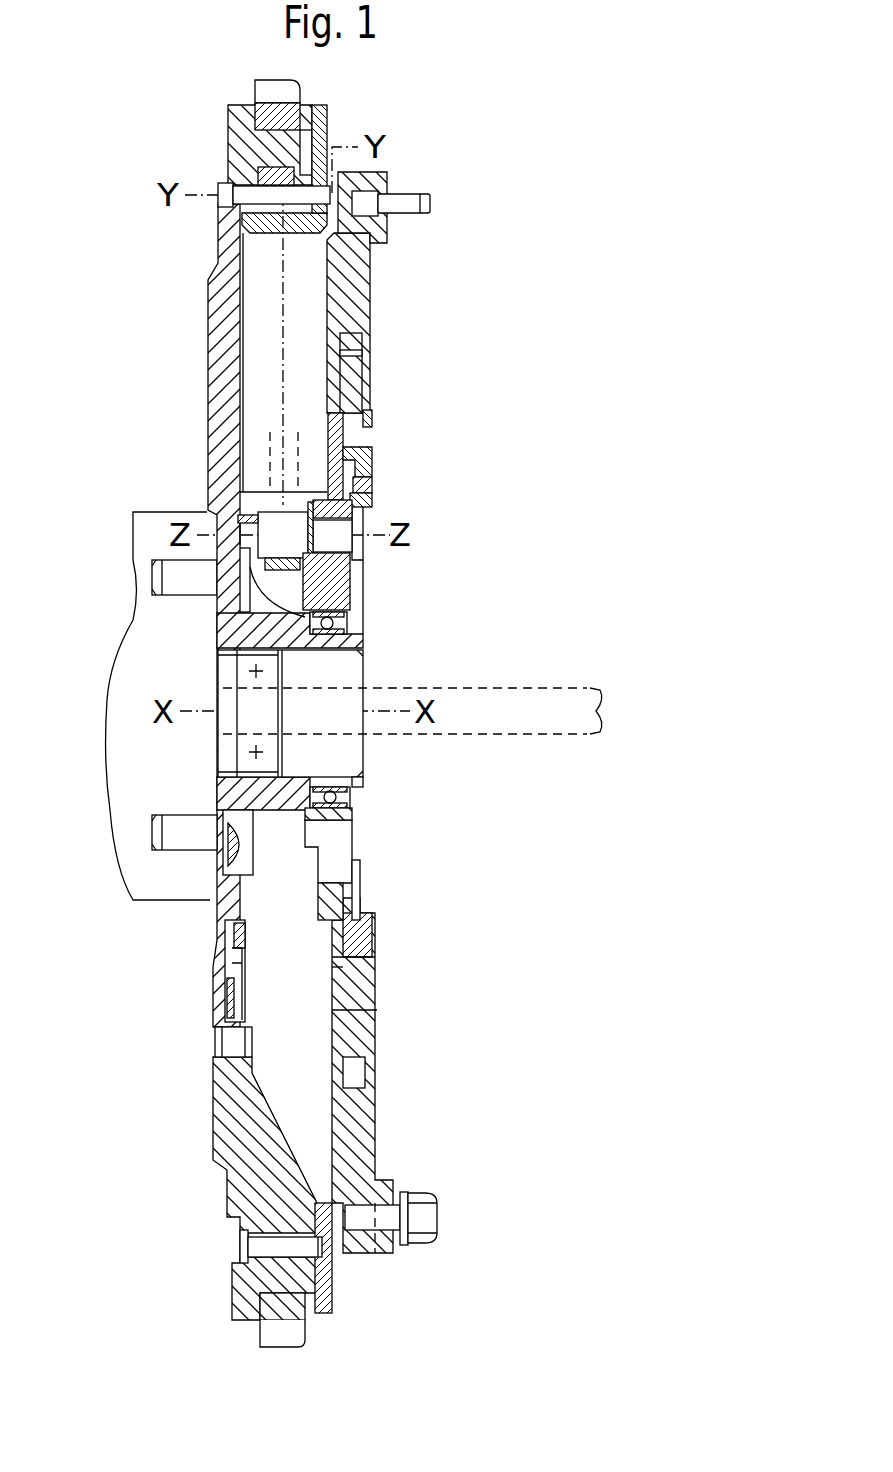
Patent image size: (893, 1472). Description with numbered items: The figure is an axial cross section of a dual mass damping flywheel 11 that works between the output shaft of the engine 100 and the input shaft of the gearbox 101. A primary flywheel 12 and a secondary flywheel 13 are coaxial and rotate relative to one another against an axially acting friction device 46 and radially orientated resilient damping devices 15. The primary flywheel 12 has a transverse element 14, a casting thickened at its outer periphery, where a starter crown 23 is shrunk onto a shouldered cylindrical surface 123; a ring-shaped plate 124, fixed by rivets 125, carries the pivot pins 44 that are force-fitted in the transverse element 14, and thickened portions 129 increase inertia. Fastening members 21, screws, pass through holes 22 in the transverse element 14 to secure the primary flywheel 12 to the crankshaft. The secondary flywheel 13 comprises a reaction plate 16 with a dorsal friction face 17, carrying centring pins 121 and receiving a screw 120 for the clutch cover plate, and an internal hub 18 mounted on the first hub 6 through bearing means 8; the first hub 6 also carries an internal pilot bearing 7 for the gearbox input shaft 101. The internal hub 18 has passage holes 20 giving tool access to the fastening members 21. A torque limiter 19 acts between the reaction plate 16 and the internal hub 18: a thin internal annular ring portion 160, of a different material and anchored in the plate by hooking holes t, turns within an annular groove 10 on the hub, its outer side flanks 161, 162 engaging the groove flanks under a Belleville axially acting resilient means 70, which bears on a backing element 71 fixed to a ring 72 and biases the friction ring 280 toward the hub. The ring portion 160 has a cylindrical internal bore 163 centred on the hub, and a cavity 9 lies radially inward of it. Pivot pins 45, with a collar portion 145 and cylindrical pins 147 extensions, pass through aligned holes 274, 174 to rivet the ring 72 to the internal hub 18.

The output shaft of the engine 100 is at (133, 620).
The dual mass damping flywheel 11 is at (285, 599).
The primary flywheel 12 is at (221, 1187).
The transverse element 14 is at (207, 338).
The reaction plate 16 is at (355, 290).
The dorsal friction face 17 is at (372, 258).
The resilient damping devices 15 is at (248, 266).
The starter crown 23 is at (292, 100).
The shouldered cylindrical surface 123 is at (257, 110).
The pivot pin 44 is at (225, 200).
The centring pin 121 is at (408, 182).
The internal annular ring portion 160 is at (358, 380).
The hooking holes t is at (364, 360).
The annular groove 10 is at (360, 410).
The outer side flank 161 is at (372, 428).
The axially acting resilient means 70 is at (368, 470).
The cavity 9 is at (366, 485).
The backing element 71 is at (370, 500).
The holes 174 is at (352, 538).
The hole 274 is at (307, 520).
The cylindrical pins 147 is at (247, 537).
The collar portion 145 is at (350, 572).
The pivot pin 45 is at (273, 547).
The internal hub 18 is at (345, 612).
The first hub 6 is at (365, 637).
The internal pilot bearing 7 is at (228, 748).
The input shaft of the gearbox 101 is at (533, 725).
The bearing means 8 is at (360, 800).
The passage holes 20 is at (348, 822).
The fastening members 21 is at (157, 835).
The holes 22 is at (213, 827).
The ring 72 is at (358, 898).
The cylindrical internal bore 163 is at (372, 945).
The friction ring 280 is at (376, 975).
The torque limiter 19 is at (385, 1075).
The outer side flank 162 is at (335, 985).
The axially acting friction device 46 is at (228, 995).
The secondary flywheel 13 is at (395, 1145).
The thickened portions 129 is at (230, 1188).
The screw 120 is at (437, 1218).
The rivets 125 is at (243, 1243).
The plate 124 is at (328, 1302).